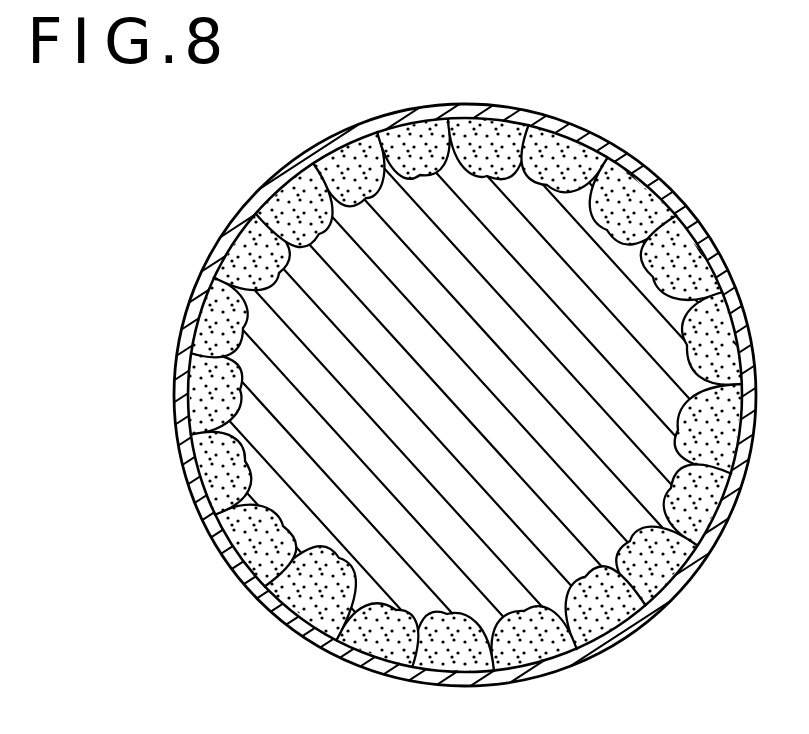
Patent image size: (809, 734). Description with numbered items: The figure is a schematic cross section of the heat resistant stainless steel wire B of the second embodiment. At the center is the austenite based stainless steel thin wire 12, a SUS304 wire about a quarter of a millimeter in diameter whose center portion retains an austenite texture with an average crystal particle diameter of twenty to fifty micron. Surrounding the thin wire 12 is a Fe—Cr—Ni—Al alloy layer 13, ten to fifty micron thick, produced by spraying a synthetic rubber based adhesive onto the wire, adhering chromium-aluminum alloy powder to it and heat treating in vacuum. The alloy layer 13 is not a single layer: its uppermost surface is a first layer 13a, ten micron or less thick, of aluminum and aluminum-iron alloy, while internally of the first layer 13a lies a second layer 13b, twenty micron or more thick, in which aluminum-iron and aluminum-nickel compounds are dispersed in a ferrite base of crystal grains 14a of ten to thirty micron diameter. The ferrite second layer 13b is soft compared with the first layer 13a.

The austenite based stainless steel thin wire 12 is at (482, 404).
The Fe—Cr—Ni—Al alloy layer 13 is at (166, 318).
The first layer 13a is at (212, 257).
The second layer 13b is at (204, 464).
The crystal grains 14a is at (226, 382).
The heat resistant stainless steel wire B is at (268, 152).